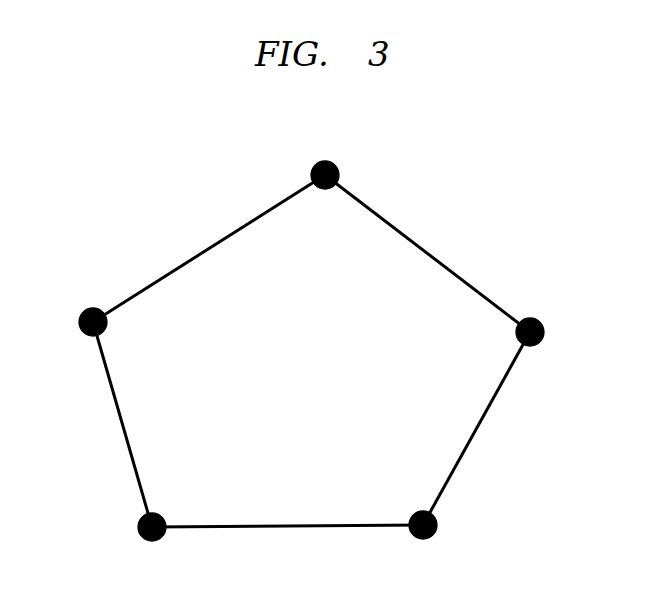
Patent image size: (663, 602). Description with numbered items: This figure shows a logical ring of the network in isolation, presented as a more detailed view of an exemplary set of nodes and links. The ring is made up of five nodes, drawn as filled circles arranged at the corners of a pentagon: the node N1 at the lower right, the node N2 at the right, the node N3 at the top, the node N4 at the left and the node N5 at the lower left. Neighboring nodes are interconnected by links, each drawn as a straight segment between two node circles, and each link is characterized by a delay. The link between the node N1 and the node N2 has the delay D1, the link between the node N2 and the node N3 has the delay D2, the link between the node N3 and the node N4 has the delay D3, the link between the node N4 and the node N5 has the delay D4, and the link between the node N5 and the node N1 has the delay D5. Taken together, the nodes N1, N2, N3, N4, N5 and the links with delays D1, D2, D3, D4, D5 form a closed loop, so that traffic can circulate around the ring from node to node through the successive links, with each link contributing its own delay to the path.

The node N1 is at (423, 544).
The node N2 is at (547, 334).
The node N3 is at (325, 160).
The node N4 is at (76, 322).
The node N5 is at (152, 545).
The link delay D1 is at (476, 428).
The link delay D2 is at (427, 253).
The link delay D3 is at (209, 248).
The link delay D4 is at (122, 424).
The link delay D5 is at (287, 546).